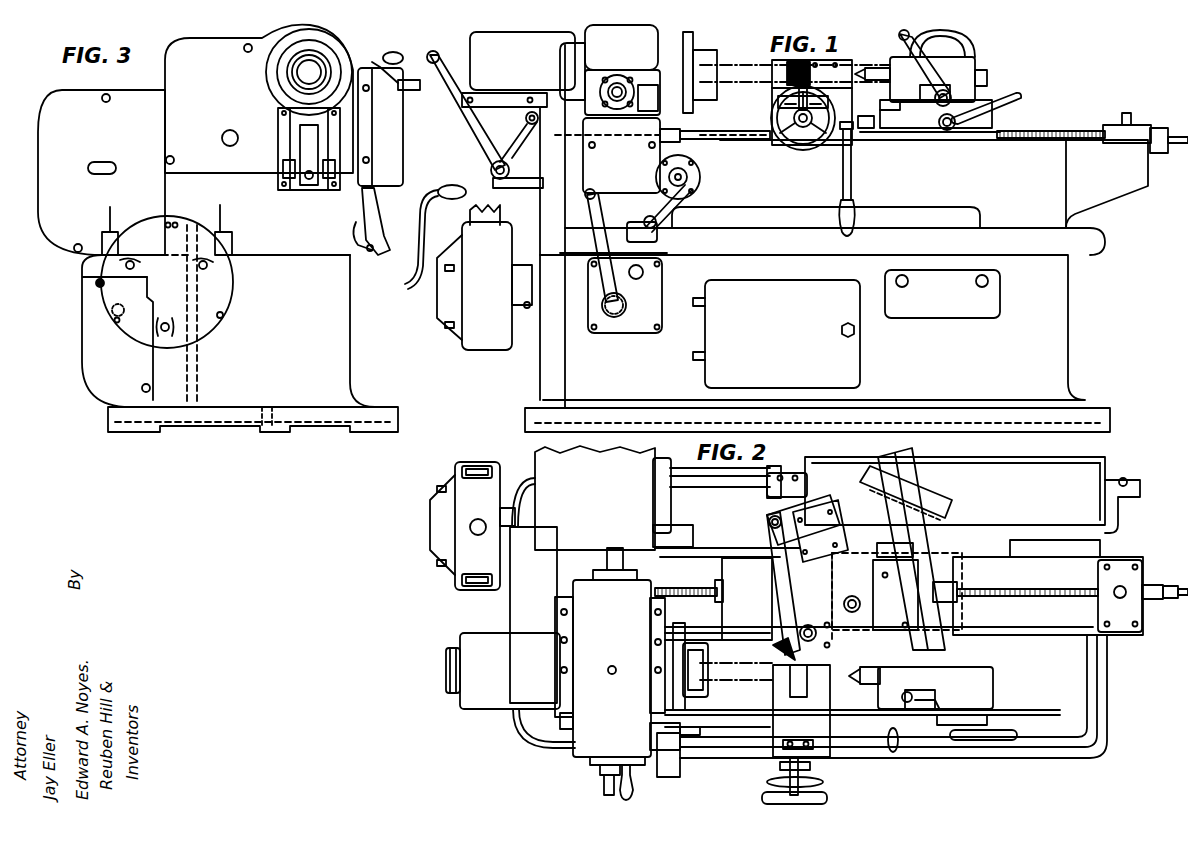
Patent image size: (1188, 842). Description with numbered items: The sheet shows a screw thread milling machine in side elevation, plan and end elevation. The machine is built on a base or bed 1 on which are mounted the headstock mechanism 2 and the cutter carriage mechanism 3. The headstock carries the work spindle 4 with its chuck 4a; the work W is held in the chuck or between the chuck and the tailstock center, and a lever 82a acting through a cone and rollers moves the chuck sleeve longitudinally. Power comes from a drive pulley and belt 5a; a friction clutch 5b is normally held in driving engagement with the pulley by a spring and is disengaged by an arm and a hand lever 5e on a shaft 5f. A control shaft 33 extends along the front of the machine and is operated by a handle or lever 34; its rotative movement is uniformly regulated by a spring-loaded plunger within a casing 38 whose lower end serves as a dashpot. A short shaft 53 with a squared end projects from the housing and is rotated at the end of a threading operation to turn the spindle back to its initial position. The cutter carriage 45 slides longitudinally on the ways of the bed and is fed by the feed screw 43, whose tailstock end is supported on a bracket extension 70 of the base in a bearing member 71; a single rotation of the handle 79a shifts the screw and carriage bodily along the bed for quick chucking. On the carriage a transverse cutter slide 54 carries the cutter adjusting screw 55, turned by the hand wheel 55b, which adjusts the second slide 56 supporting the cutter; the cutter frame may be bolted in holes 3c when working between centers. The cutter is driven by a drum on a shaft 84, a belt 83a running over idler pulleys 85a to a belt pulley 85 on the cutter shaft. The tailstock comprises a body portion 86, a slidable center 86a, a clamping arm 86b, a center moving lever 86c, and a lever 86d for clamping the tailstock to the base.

In FIG. 3, the base or bed 1 is at (240, 405).
In FIG. 1, the base or bed 1 is at (1058, 340).
In FIG. 3, the headstock mechanism 2 is at (345, 48).
In FIG. 1, the headstock mechanism 2 is at (470, 42).
In FIG. 2, the headstock mechanism 2 is at (585, 742).
In FIG. 1, the cutter carriage mechanism 3 is at (876, 136).
In FIG. 2, the holes 3c is at (842, 638).
In FIG. 3, the work spindle 4 is at (305, 72).
In FIG. 2, the work spindle 4 is at (447, 664).
In FIG. 1, the chuck 4a is at (703, 72).
In FIG. 3, the belt 5a is at (110, 210).
In FIG. 1, the belt 5a is at (495, 219).
In FIG. 2, the belt 5a is at (480, 462).
In FIG. 2, the friction clutch 5b is at (826, 623).
In FIG. 1, the hand lever 5e is at (614, 286).
In FIG. 1, the shaft 5f is at (613, 313).
In FIG. 2, the control shaft 33 is at (713, 718).
In FIG. 1, the handle or lever 34 is at (847, 172).
In FIG. 3, the casing 38 is at (377, 205).
In FIG. 1, the casing 38 is at (640, 207).
In FIG. 1, the feed screw 43 is at (1085, 120).
In FIG. 2, the feed screw 43 is at (1072, 603).
In FIG. 1, the cutter carriage 45 is at (758, 127).
In FIG. 2, the cutter carriage 45 is at (700, 586).
In FIG. 3, the short shaft 53 is at (406, 97).
In FIG. 1, the short shaft 53 is at (620, 86).
In FIG. 1, the transverse cutter slide 54 is at (780, 118).
In FIG. 2, the cutter adjusting screw 55 is at (604, 781).
In FIG. 1, the hand wheel 55b is at (800, 150).
In FIG. 2, the hand wheel 55b is at (830, 798).
In FIG. 1, the second slide 56 is at (867, 116).
In FIG. 2, the second slide 56 is at (772, 592).
In FIG. 1, the bracket extension 70 is at (1112, 186).
In FIG. 2, the bearing member 71 is at (1120, 633).
In FIG. 1, the handle 79a is at (657, 222).
In FIG. 1, the lever 82a is at (482, 138).
In FIG. 2, the belt 83a is at (933, 537).
In FIG. 2, the shaft 84 is at (710, 489).
In FIG. 1, the belt pulley 85 is at (973, 46).
In FIG. 2, the belt pulley 85 is at (1080, 465).
In FIG. 2, the idler pulleys 85a is at (915, 453).
In FIG. 1, the body portion 86 is at (975, 92).
In FIG. 2, the body portion 86 is at (965, 681).
In FIG. 2, the slidable center 86a is at (858, 673).
In FIG. 2, the clamping arm 86b is at (907, 692).
In FIG. 1, the center moving lever 86c is at (898, 38).
In FIG. 1, the lever 86d is at (1002, 104).
In FIG. 1, the workpiece W is at (757, 70).
In FIG. 2, the workpiece W is at (742, 666).